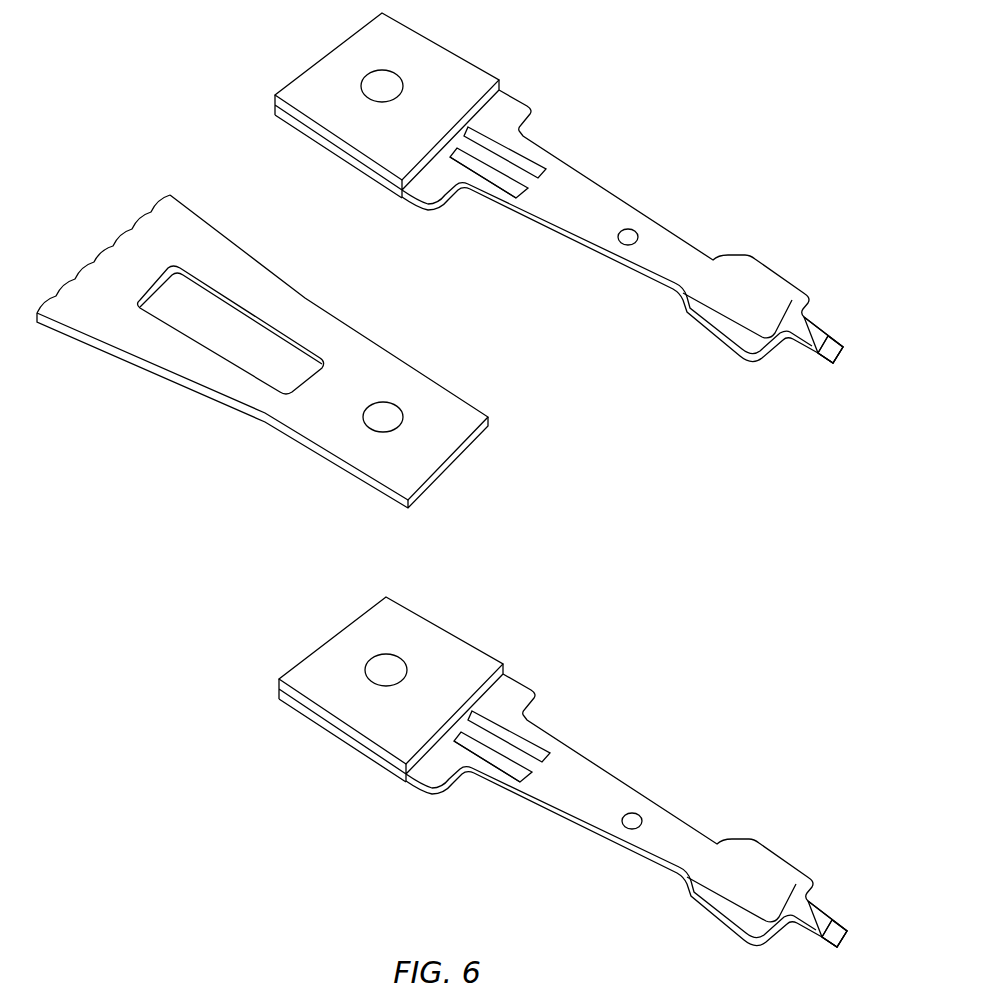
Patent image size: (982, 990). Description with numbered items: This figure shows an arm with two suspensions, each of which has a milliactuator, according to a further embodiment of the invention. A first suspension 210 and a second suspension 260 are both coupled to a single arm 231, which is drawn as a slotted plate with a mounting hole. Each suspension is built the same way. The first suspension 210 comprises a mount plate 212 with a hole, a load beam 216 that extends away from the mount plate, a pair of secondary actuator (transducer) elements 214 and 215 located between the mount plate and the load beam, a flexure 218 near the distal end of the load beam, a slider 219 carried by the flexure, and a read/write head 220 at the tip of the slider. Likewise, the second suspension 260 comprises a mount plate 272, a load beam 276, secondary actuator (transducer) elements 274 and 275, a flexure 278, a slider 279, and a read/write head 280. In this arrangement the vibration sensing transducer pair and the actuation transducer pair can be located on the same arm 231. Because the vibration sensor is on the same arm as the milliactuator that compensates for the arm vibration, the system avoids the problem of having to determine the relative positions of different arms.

The suspension 210 is at (442, 44).
The mount plate 212 is at (342, 57).
The secondary actuator element 214 is at (530, 153).
The secondary actuator element 215 is at (493, 190).
The load beam 216 is at (653, 220).
The flexure 218 is at (757, 273).
The slider 219 is at (820, 323).
The read/write head 220 is at (838, 340).
The arm 231 is at (238, 263).
The suspension 260 is at (391, 684).
The mount plate 272 is at (357, 636).
The secondary actuator element 274 is at (523, 736).
The secondary actuator element 275 is at (480, 785).
The load beam 276 is at (626, 810).
The flexure 278 is at (741, 863).
The slider 279 is at (837, 894).
The read/write head 280 is at (853, 910).